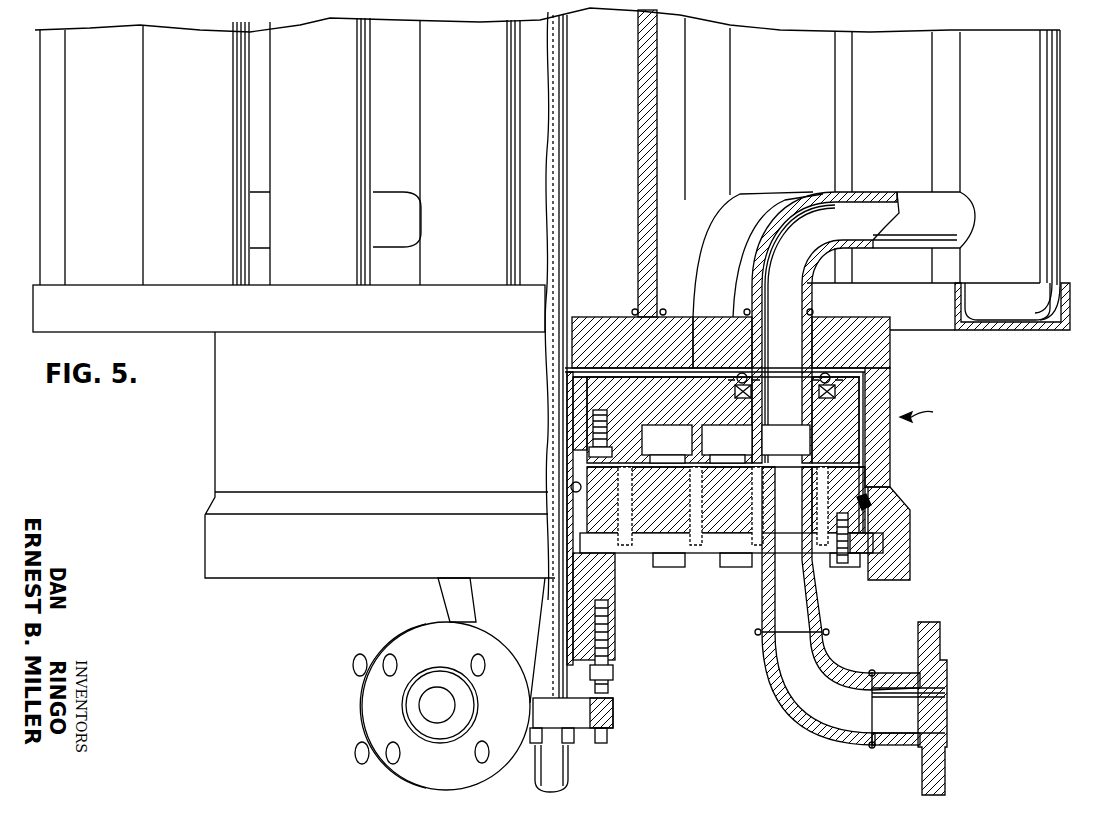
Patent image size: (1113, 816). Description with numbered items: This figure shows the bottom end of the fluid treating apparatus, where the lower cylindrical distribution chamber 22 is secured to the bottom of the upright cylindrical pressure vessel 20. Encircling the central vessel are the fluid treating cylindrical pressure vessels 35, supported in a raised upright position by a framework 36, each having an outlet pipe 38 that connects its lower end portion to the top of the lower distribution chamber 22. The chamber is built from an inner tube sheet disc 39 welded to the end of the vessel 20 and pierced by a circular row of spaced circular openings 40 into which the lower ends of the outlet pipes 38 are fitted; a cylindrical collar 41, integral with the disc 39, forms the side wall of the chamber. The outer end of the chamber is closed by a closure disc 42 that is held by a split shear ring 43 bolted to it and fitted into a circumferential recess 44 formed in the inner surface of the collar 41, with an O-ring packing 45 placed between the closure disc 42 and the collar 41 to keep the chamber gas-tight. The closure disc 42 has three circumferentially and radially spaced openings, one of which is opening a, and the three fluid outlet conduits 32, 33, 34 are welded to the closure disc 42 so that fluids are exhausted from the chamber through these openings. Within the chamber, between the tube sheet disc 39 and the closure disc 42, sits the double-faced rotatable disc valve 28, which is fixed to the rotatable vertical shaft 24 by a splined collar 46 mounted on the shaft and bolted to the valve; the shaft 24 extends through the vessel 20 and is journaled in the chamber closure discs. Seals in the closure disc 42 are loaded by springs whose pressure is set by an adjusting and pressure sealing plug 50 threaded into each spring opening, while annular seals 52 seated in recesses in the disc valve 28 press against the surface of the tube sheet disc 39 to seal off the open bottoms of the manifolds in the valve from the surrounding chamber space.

The upright cylindrical pressure vessel 20 is at (655, 158).
The lower cylindrical distribution chamber 22 is at (932, 410).
The rotatable vertical shaft 24 is at (568, 293).
The double-faced rotatable disc valve 28 is at (864, 398).
The fluid outlet conduit 32 is at (760, 620).
The fluid outlet conduit 33 is at (440, 596).
The fluid outlet conduit 34 is at (490, 610).
The fluid treating cylindrical pressure vessel 35 is at (167, 197).
The framework 36 is at (1052, 333).
The outlet pipe 38 is at (806, 207).
The inner tube sheet disc 39 is at (648, 327).
The circular openings 40 is at (753, 315).
The cylindrical collar 41 is at (892, 446).
The closure disc 42 is at (662, 510).
The split shear ring 43 is at (884, 536).
The circumferential recess 44 is at (908, 563).
The O-ring packing 45 is at (870, 502).
The splined collar 46 is at (592, 418).
The adjusting and pressure sealing plug 50 is at (768, 540).
The annular seals 52 is at (800, 383).
The opening a is at (782, 533).